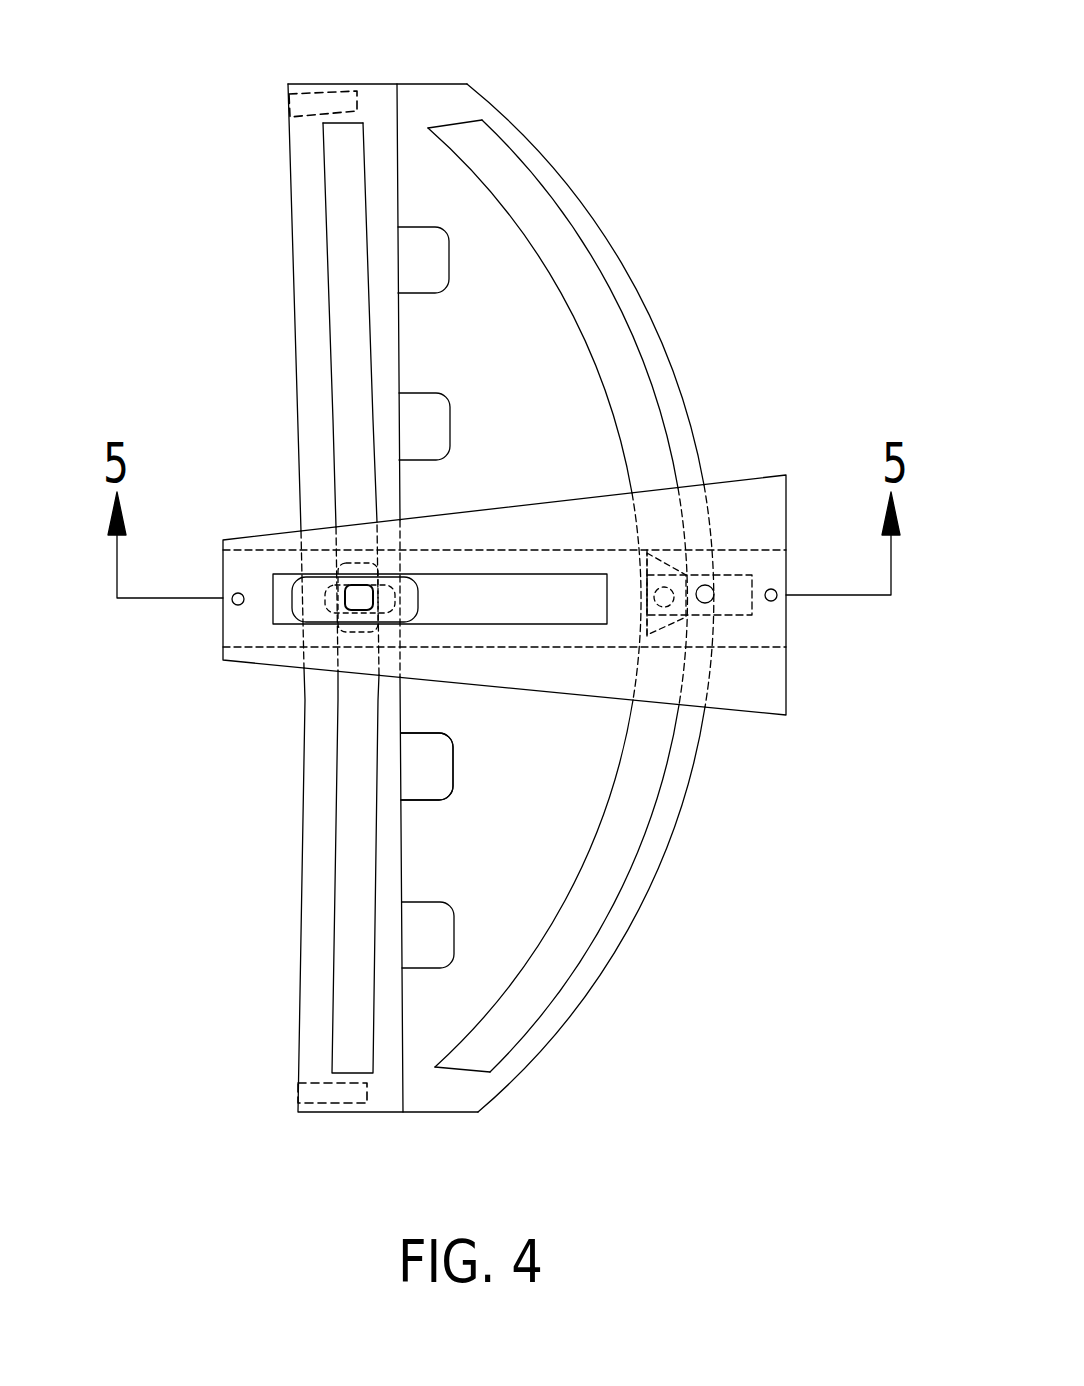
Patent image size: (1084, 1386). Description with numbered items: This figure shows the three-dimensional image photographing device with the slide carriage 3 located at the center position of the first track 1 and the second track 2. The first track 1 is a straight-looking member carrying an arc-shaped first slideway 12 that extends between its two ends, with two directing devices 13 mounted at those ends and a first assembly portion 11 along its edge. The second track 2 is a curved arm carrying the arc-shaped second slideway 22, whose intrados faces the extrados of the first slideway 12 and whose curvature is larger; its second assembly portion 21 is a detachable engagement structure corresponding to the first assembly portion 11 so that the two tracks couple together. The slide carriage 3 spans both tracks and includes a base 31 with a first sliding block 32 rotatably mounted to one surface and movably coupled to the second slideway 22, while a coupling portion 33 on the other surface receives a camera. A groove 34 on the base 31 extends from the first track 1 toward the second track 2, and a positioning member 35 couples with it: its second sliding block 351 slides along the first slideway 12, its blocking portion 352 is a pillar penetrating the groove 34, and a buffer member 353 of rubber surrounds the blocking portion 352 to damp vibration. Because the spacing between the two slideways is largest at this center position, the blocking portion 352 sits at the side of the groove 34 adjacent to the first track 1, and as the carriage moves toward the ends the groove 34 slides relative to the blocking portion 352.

The first track 1 is at (310, 931).
The first assembly portion 11 is at (453, 769).
The first slideway 12 is at (335, 200).
The directing devices 13 is at (325, 86).
The second track 2 is at (556, 181).
The second assembly portion 21 is at (427, 766).
The second slideway 22 is at (560, 233).
The slide carriage 3 is at (503, 540).
The base 31 is at (730, 488).
The first sliding block 32 is at (667, 617).
The coupling portion 33 is at (711, 600).
The groove 34 is at (557, 572).
The positioning member 35 is at (284, 484).
The second sliding block 351 is at (363, 565).
The blocking portion 352 is at (357, 593).
The buffer member 353 is at (295, 590).